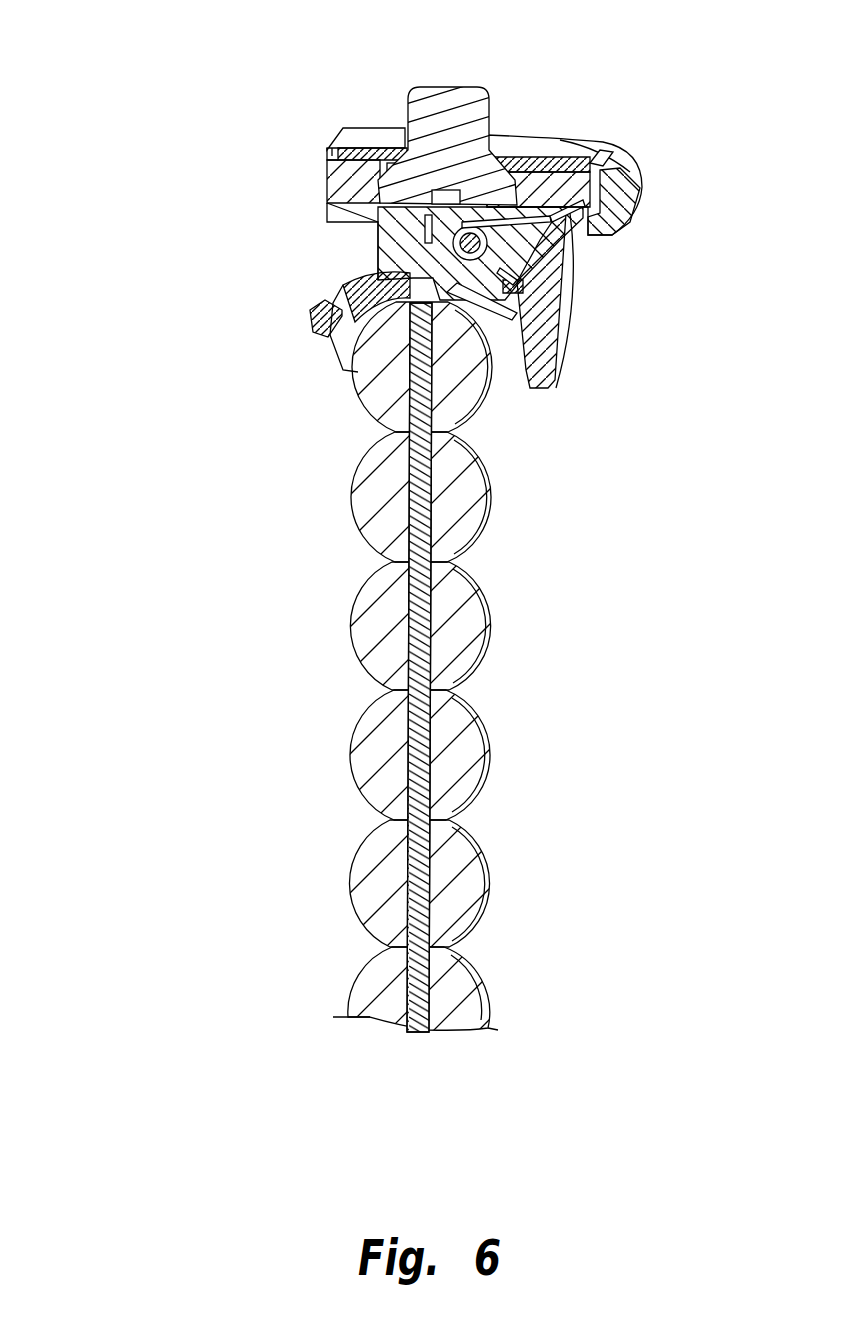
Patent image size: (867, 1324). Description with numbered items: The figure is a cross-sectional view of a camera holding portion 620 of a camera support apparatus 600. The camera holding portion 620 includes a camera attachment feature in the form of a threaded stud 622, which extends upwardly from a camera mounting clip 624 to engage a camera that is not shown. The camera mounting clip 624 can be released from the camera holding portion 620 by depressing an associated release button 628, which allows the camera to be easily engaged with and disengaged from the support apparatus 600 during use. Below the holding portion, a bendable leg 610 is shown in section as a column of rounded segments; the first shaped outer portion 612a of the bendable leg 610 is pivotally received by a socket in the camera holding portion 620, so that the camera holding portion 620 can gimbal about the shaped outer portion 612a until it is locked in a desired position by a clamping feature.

The camera support apparatus 600 is at (207, 688).
The bendable leg 610 is at (492, 752).
The first shaped outer portion 612a is at (472, 400).
The camera holding portion 620 is at (352, 78).
The threaded stud 622 is at (458, 88).
The camera mounting clip 624 is at (345, 128).
The release button 628 is at (567, 313).